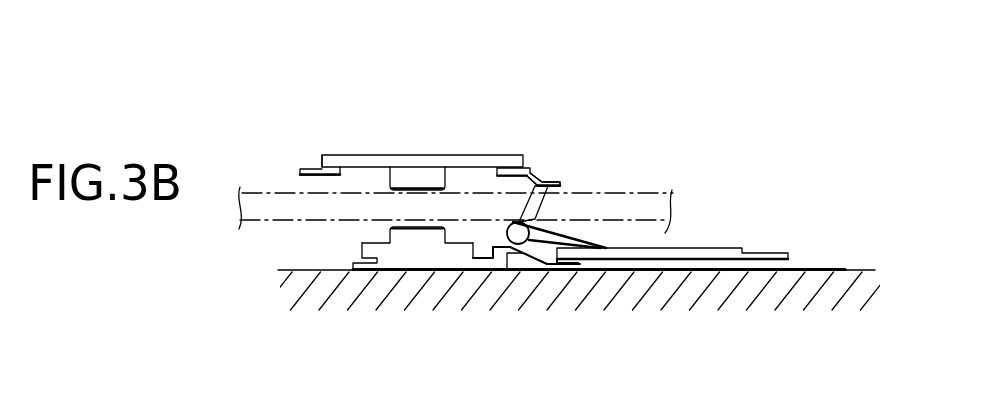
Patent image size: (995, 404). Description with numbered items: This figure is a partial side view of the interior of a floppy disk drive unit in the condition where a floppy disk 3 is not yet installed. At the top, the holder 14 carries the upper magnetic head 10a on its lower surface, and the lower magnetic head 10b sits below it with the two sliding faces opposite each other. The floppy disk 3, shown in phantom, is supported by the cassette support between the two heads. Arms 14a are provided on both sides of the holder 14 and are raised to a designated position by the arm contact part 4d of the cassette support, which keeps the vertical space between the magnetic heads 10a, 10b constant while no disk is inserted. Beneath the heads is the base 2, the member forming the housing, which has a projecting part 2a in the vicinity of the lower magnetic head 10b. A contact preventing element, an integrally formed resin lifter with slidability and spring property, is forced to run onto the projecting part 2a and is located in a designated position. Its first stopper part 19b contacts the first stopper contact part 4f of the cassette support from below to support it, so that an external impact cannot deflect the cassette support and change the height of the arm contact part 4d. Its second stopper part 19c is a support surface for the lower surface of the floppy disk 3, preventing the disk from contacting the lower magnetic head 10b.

The base 2 is at (683, 290).
The projecting part 2a is at (513, 266).
The floppy disk 3 is at (633, 200).
The arm contact part 4d is at (310, 168).
The first stopper contact part 4f is at (555, 182).
The upper magnetic head 10a is at (438, 168).
The lower magnetic head 10b is at (415, 233).
The holder 14 is at (418, 155).
The arm 14a is at (356, 155).
The first stopper part 19b is at (548, 194).
The second stopper part 19c is at (513, 222).